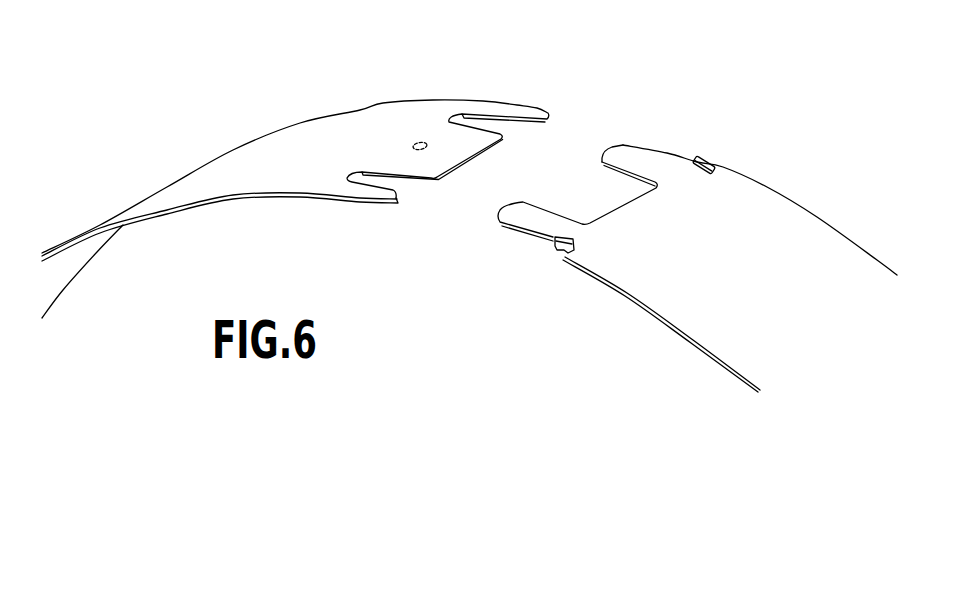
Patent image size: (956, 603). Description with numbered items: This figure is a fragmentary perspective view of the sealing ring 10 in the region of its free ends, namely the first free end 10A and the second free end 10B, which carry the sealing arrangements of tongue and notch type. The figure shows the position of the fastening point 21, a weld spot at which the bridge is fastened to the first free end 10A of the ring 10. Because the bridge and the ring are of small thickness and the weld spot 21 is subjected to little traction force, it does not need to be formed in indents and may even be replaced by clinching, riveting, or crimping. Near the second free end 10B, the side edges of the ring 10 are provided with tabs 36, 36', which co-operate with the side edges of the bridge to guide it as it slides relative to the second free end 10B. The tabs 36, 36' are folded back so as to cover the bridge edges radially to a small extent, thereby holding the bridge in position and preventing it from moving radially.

The sealing ring 10 is at (740, 188).
The first free end 10A is at (525, 98).
The second free end 10B is at (657, 143).
The fastening point 21 is at (414, 145).
The tab 36 is at (535, 257).
The tab 36' is at (720, 135).